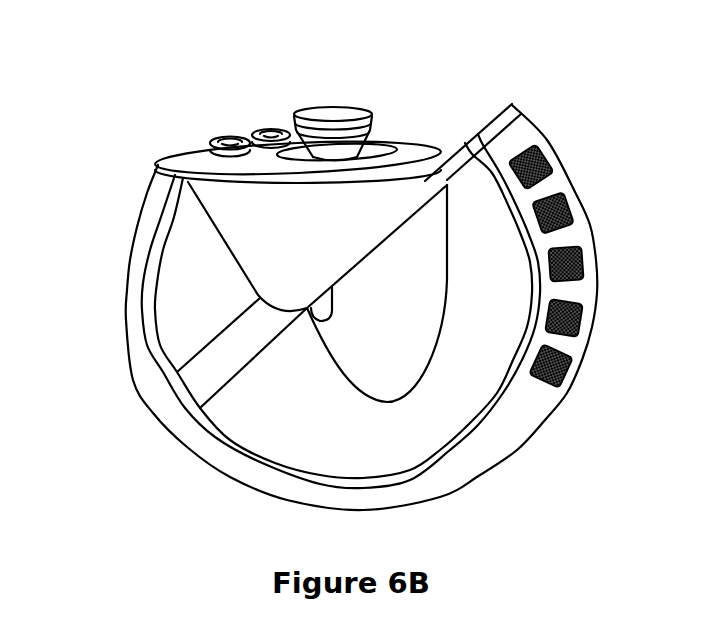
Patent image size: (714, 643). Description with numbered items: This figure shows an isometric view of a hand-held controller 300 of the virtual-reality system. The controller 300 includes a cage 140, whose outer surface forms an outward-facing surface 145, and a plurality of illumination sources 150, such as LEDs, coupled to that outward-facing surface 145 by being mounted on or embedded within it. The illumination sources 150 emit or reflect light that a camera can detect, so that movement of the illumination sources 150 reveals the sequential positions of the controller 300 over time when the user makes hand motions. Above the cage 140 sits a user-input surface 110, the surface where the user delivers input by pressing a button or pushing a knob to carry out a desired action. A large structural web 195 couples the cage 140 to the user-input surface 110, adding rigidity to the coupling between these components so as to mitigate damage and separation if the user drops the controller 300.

The hand-held controller 300 is at (134, 64).
The user-input surface 110 is at (203, 153).
The cage 140 is at (145, 219).
The outward-facing surface 145 is at (555, 183).
The illumination sources 150 is at (583, 263).
The structural web 195 is at (186, 309).